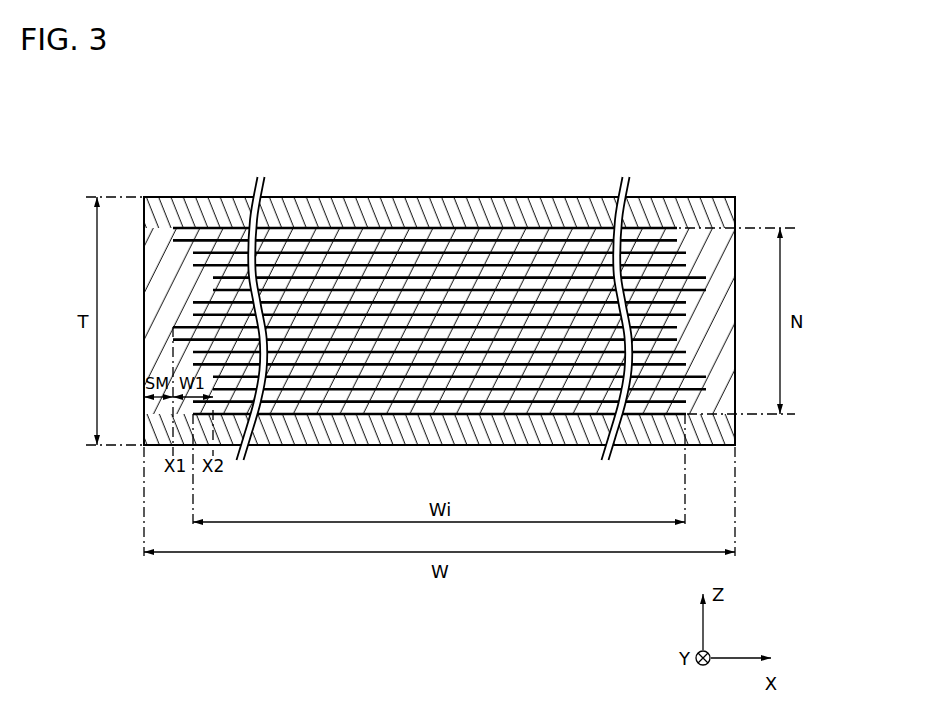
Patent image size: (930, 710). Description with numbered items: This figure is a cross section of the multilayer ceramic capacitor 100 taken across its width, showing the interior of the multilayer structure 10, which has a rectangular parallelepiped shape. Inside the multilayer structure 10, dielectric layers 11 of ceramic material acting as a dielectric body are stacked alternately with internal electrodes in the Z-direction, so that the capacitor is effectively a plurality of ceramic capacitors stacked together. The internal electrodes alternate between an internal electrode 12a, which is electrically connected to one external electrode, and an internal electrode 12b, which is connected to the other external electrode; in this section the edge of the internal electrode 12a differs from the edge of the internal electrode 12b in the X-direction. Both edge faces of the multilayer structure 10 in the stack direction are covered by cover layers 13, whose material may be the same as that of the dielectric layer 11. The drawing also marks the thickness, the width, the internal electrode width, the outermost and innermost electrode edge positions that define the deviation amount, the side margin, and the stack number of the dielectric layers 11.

The multilayer ceramic capacitor 100 is at (462, 272).
The multilayer structure 10 is at (641, 197).
The dielectric layer 11 is at (580, 248).
The internal electrode 12a is at (326, 253).
The internal electrode 12b is at (413, 265).
The cover layer 13 is at (485, 213).